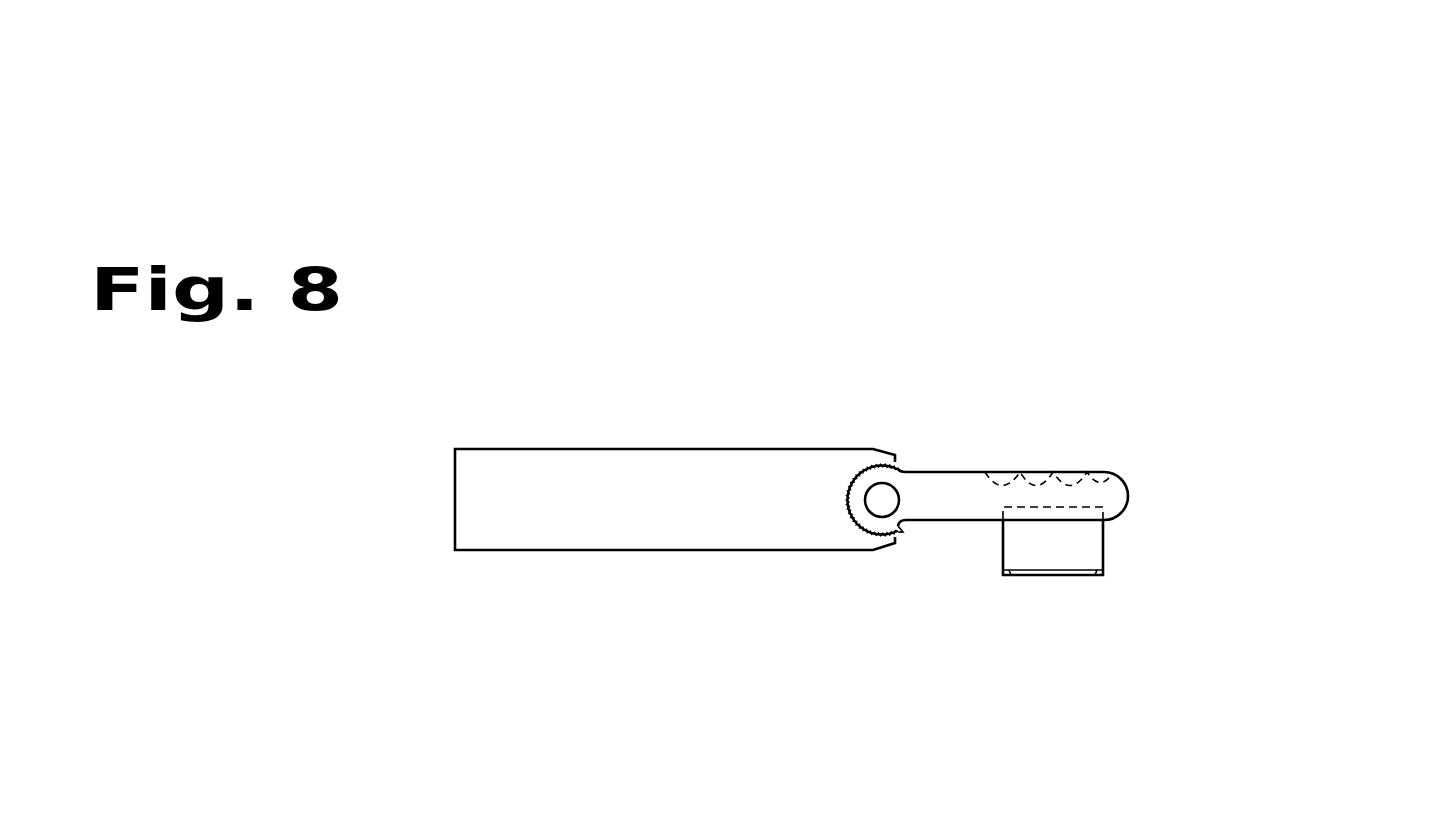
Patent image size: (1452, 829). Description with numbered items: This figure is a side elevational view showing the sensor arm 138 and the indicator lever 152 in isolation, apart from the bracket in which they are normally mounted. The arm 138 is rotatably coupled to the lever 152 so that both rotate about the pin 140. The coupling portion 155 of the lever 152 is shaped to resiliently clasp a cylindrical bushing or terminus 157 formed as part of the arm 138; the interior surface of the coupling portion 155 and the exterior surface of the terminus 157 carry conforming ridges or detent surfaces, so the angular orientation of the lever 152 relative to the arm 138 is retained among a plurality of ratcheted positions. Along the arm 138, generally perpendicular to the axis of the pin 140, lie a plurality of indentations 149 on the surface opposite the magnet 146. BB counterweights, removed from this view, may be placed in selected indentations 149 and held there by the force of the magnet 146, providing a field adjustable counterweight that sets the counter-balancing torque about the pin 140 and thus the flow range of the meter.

The indicator lever 152 is at (673, 510).
The coupling portion 155 is at (853, 532).
The pin 140 is at (882, 500).
The sensor arm 138 is at (970, 485).
The indentations 149 is at (1063, 483).
The magnet 146 is at (1085, 552).
The terminus 157 is at (900, 527).